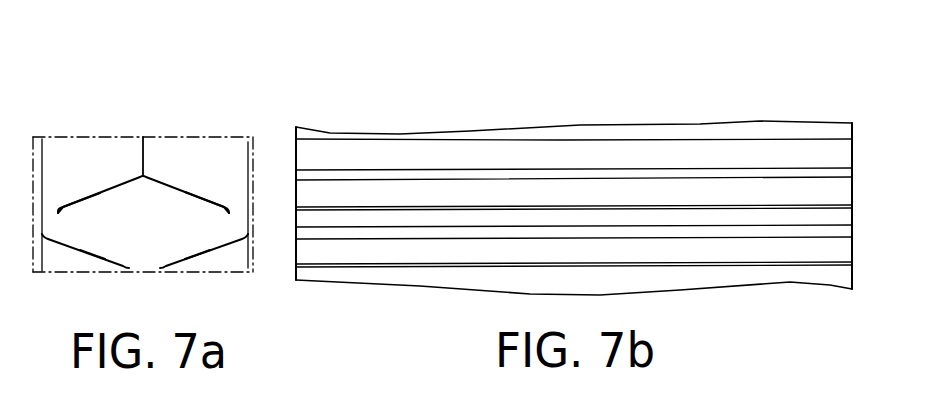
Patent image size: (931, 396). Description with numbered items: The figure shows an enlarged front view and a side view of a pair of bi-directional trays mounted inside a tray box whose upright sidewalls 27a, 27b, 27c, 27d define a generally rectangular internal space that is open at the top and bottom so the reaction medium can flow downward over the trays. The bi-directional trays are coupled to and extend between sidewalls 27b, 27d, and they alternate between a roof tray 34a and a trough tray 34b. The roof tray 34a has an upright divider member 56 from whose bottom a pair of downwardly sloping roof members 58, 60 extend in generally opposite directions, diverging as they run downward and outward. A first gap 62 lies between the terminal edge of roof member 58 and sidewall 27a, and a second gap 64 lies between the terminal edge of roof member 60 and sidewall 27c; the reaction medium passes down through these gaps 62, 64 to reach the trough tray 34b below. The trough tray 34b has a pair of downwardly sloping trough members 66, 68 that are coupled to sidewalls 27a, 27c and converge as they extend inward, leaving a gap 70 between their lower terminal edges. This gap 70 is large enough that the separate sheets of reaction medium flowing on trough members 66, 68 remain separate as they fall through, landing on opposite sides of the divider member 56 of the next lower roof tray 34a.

In FIG. 7a, the sidewall 27a is at (40, 150).
In FIG. 7b, the sidewall 27b is at (848, 150).
In FIG. 7a, the sidewall 27c is at (249, 151).
In FIG. 7b, the sidewall 27d is at (296, 153).
In FIG. 7a, the roof tray 34a is at (118, 188).
In FIG. 7b, the roof tray 34a is at (490, 183).
In FIG. 7a, the trough tray 34b is at (73, 250).
In FIG. 7b, the trough tray 34b is at (653, 247).
In FIG. 7a, the divider member 56 is at (145, 152).
In FIG. 7b, the divider member 56 is at (600, 150).
In FIG. 7a, the roof member 58 is at (80, 198).
In FIG. 7a, the roof member 60 is at (212, 208).
In FIG. 7a, the first gap 62 is at (51, 210).
In FIG. 7b, the first gap 62 is at (718, 208).
In FIG. 7a, the second gap 64 is at (237, 213).
In FIG. 7a, the trough member 66 is at (90, 250).
In FIG. 7a, the trough member 68 is at (190, 268).
In FIG. 7a, the gap 70 is at (142, 263).